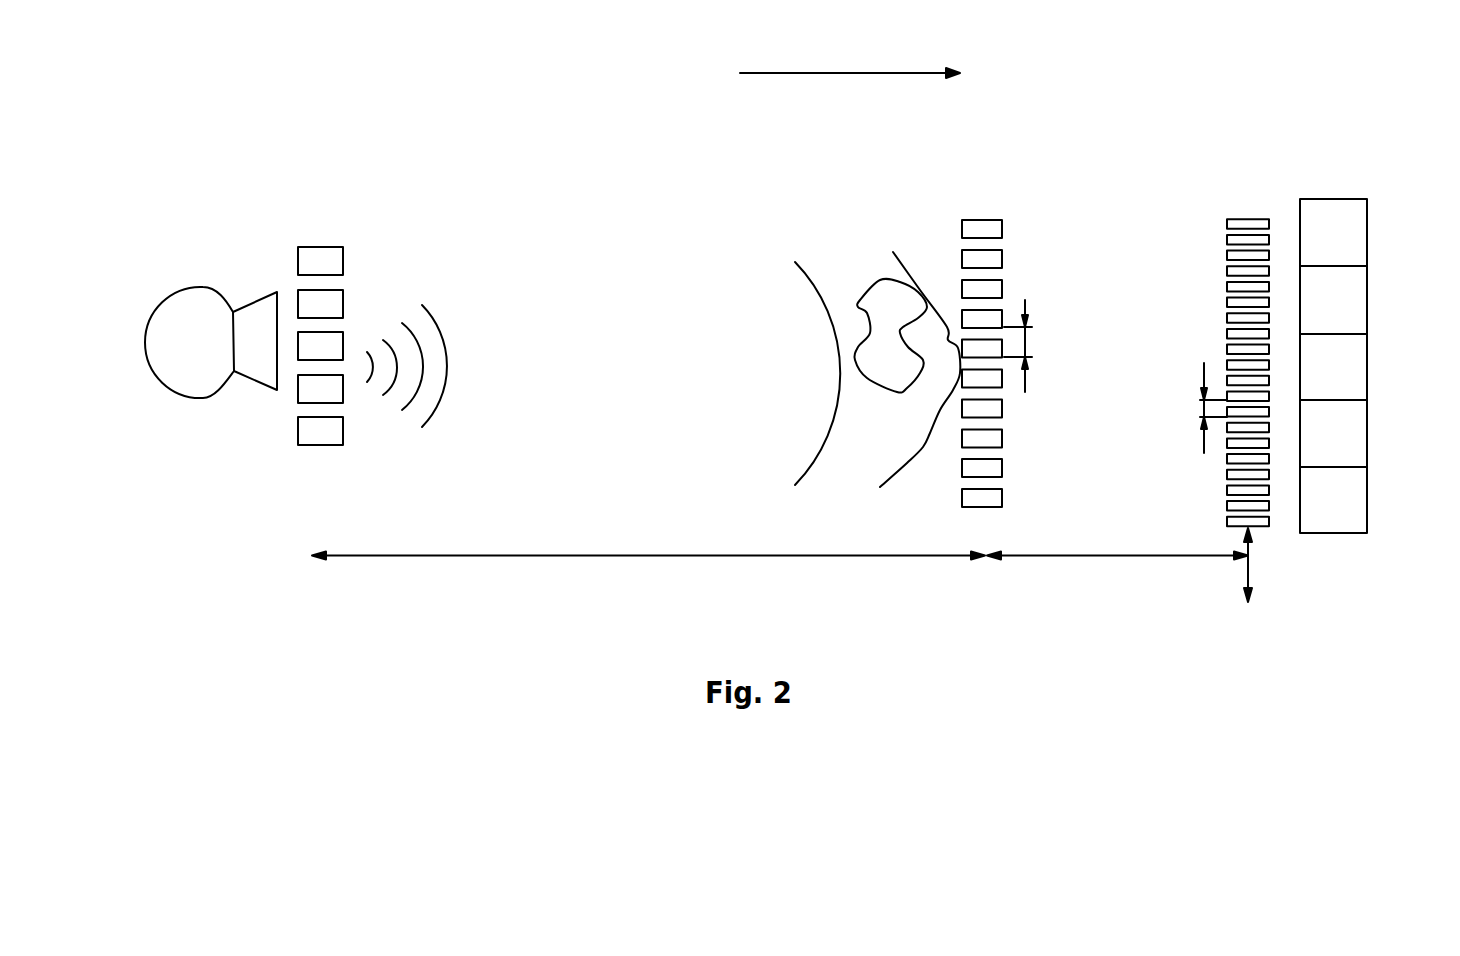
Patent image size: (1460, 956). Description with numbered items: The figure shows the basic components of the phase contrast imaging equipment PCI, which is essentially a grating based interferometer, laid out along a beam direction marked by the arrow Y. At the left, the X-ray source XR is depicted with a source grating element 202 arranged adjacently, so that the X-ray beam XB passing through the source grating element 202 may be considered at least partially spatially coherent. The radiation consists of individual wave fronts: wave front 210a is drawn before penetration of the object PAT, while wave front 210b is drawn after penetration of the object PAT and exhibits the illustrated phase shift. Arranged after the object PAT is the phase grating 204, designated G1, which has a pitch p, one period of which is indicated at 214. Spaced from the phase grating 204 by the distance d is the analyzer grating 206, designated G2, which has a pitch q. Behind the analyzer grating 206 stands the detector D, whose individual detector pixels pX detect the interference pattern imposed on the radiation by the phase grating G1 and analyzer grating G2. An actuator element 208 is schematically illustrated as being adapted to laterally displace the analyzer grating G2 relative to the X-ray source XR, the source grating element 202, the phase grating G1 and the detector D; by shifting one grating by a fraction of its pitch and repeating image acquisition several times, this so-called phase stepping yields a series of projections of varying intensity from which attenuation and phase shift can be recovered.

The phase contrast imaging equipment PCI is at (393, 145).
The Y direction Y is at (850, 54).
The X-ray source XR is at (198, 383).
The X-ray beam XB is at (445, 378).
The source grating element 202 is at (312, 445).
The phase grating 204 is at (985, 220).
The analyzer grating 206 is at (1227, 225).
The actuator element 208 is at (1252, 573).
The wave front 210a is at (837, 373).
The wave front 210b is at (872, 496).
The grating period element 214 is at (1002, 438).
The object PAT is at (887, 297).
The pitch of phase grating p is at (1028, 346).
The pitch of analyzer grating q is at (1199, 408).
The phase grating G1 is at (657, 574).
The analyzer grating G2 is at (1263, 527).
The distance d is at (1117, 574).
The detector D is at (1368, 533).
The detector pixel pX is at (1357, 240).